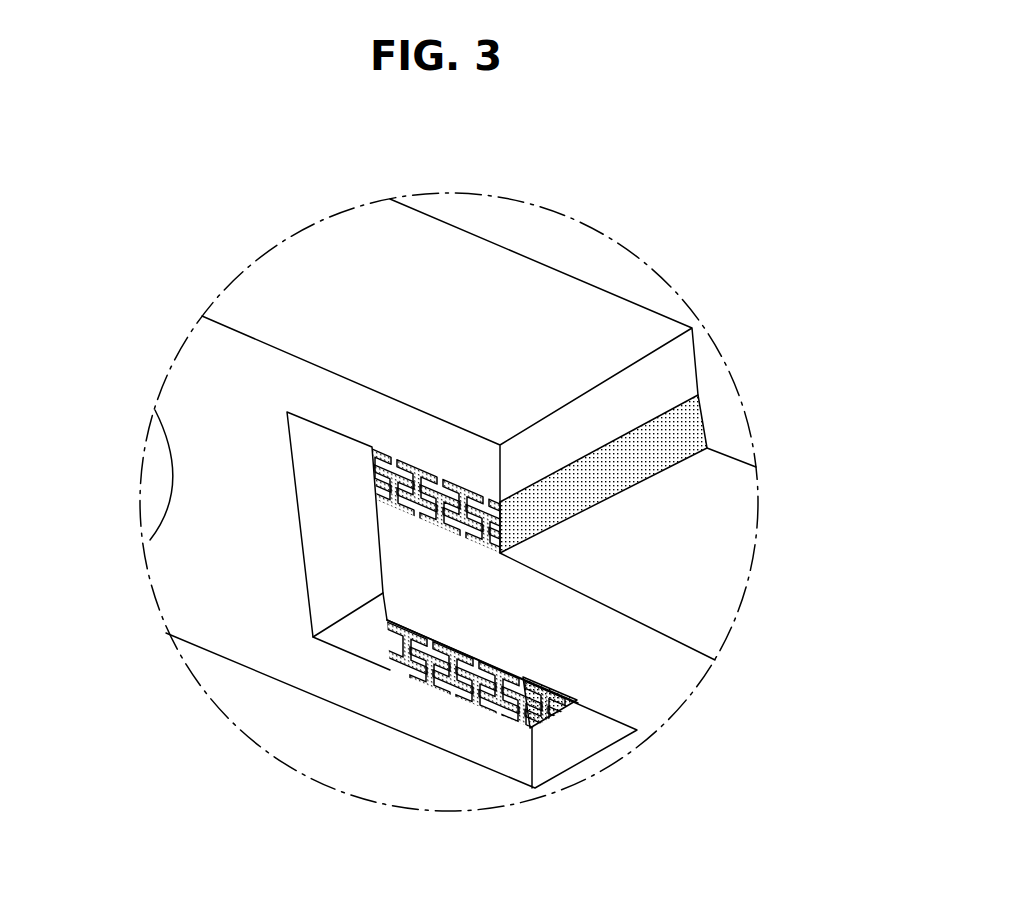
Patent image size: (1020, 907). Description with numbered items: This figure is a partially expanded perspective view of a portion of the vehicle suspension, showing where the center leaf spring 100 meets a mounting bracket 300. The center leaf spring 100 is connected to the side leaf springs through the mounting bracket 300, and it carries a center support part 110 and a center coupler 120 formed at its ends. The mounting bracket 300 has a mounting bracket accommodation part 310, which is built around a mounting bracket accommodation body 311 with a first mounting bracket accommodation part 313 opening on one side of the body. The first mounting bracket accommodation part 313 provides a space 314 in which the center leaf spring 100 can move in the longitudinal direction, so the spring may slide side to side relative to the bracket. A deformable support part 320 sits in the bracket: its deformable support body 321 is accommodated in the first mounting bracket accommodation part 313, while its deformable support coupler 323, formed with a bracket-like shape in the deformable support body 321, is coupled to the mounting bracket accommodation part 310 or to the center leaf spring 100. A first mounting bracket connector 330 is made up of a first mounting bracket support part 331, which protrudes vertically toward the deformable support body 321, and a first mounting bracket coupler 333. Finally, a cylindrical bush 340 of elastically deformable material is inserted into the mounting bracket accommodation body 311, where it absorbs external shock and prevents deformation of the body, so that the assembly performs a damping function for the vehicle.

The center leaf spring 100 is at (604, 667).
The center support part 110 is at (602, 667).
The center coupler 120 is at (576, 677).
The mounting bracket 300 is at (449, 472).
The mounting bracket accommodation part 310 is at (389, 659).
The mounting bracket accommodation body 311 is at (389, 717).
The first mounting bracket accommodation part 313 is at (298, 725).
The space 314 is at (328, 649).
The deformable support part 320 is at (479, 394).
The deformable support body 321 is at (450, 394).
The deformable support coupler 323 is at (611, 474).
The first mounting bracket connector 330 is at (440, 426).
The first mounting bracket support part 331 is at (417, 486).
The first mounting bracket coupler 333 is at (371, 466).
The bush 340 is at (112, 475).